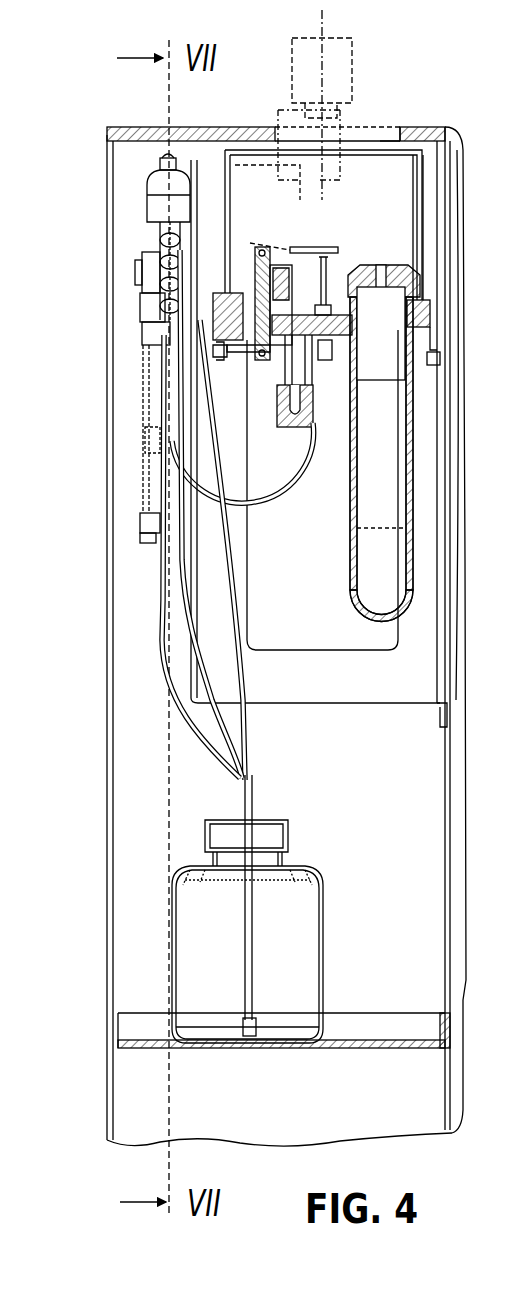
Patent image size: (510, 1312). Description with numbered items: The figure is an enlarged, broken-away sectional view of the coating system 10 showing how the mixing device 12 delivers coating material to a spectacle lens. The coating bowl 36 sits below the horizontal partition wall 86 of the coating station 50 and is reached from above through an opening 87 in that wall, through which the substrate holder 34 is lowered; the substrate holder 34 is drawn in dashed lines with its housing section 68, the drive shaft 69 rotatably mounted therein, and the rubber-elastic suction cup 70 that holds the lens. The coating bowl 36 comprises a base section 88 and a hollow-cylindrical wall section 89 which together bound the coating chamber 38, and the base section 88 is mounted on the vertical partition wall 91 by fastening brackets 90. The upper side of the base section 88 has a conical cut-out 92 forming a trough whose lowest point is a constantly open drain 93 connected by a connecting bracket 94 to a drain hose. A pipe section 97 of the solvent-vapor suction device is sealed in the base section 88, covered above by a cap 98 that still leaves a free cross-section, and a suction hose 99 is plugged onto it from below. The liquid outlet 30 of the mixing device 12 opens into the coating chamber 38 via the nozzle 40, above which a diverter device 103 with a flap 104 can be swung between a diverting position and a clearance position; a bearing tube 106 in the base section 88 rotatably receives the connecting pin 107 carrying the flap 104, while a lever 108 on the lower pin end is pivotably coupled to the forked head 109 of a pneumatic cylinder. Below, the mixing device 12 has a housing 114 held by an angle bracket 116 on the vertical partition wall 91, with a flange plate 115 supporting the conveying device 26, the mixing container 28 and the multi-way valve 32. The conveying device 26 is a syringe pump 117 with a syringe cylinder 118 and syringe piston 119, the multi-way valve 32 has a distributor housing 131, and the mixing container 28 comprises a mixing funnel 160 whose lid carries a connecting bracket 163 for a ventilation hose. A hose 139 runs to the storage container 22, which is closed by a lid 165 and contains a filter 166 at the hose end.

The coating system 10 is at (440, 40).
The mixing device 12 is at (128, 468).
The second storage container 22 is at (322, 982).
The conveying device 26 is at (130, 522).
The mixing container 28 is at (146, 190).
The liquid outlet 30 is at (300, 470).
The multi-way valve 32 is at (132, 283).
The substrate holder 34 is at (347, 66).
The coating bowl 36 is at (427, 200).
The coating chamber 38 is at (404, 219).
The nozzle 40 is at (326, 262).
The coating station 50 is at (384, 138).
The housing section 68 is at (305, 57).
The drive shaft 69 is at (314, 115).
The suction cup 70 is at (283, 162).
The horizontal partition wall 86 is at (127, 133).
The opening 87 is at (405, 133).
The base section 88 is at (428, 312).
The hollow-cylindrical wall section 89 is at (420, 233).
The fastening bracket 90 is at (439, 355).
The vertical partition wall 91 is at (458, 420).
The conical cut-out 92 is at (300, 305).
The drain 93 is at (280, 290).
The connecting bracket 94 is at (280, 370).
The pipe section 97 is at (408, 320).
The cap 98 is at (398, 270).
The suction hose 99 is at (358, 382).
The diverter device 103 is at (262, 222).
The flap 104 is at (330, 248).
The bearing tube 106 is at (262, 292).
The connecting pin 107 is at (155, 334).
The lever 108 is at (247, 352).
The forked head 109 is at (214, 351).
The housing 114 is at (383, 634).
The flange plate 115 is at (195, 582).
The angle bracket 116 is at (415, 694).
The syringe pump 117 is at (142, 425).
The syringe cylinder 118 is at (150, 338).
The syringe piston 119 is at (152, 480).
The distributor housing 131 is at (165, 258).
The hose 139 is at (250, 803).
The mixing funnel 160 is at (155, 214).
The connecting bracket 163 is at (166, 160).
The lid 165 is at (287, 832).
The filter 166 is at (255, 1028).